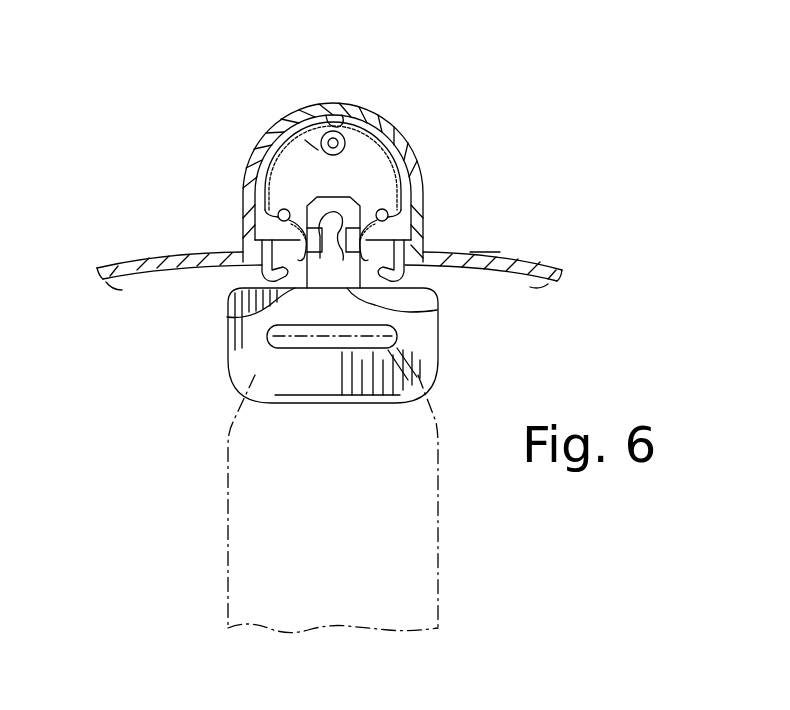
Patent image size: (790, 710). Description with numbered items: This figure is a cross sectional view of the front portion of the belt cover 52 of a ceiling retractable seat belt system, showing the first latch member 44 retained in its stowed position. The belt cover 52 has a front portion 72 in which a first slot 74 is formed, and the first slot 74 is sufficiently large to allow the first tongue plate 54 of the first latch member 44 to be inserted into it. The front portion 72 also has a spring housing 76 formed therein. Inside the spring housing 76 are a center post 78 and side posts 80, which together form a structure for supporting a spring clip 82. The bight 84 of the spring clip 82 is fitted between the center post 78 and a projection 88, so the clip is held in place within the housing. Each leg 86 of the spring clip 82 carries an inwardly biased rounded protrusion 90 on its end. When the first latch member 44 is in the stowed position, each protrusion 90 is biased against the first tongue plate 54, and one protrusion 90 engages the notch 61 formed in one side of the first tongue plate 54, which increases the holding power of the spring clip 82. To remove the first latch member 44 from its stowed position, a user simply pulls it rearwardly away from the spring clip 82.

The first latch member 44 is at (455, 335).
The belt cover 52 is at (537, 252).
The first tongue plate 54 is at (440, 310).
The notch 61 is at (352, 298).
The front portion 72 is at (480, 252).
The first slot 74 is at (227, 317).
The spring housing 76 is at (407, 137).
The center post 78 is at (313, 147).
The side posts 80 is at (378, 210).
The spring clip 82 is at (283, 147).
The bight 84 is at (347, 117).
The leg 86 is at (267, 212).
The projection 88 is at (334, 118).
The rounded protrusion 90 is at (247, 240).